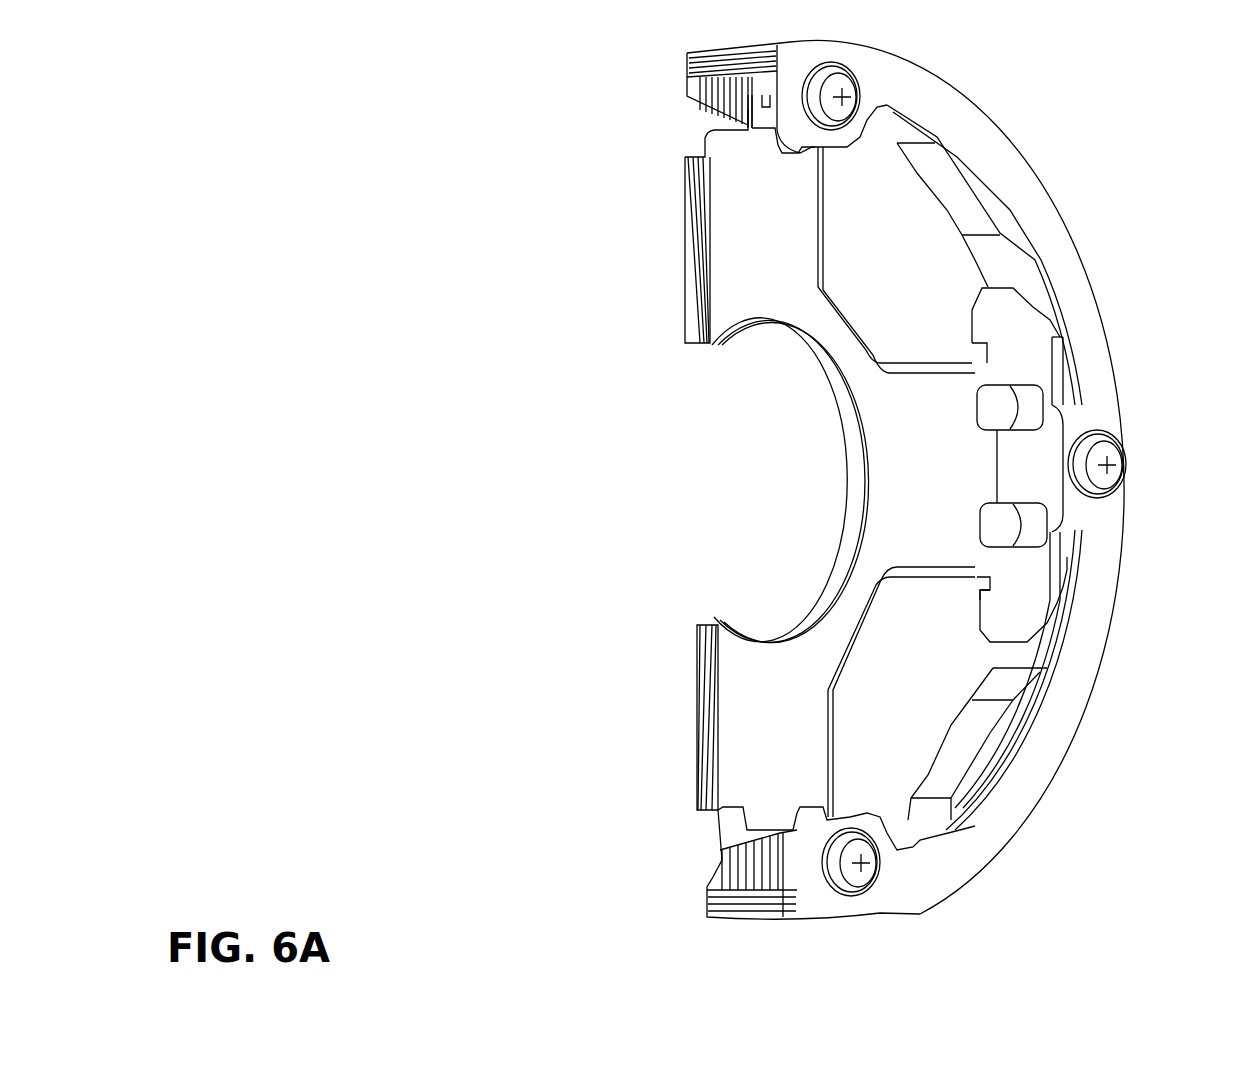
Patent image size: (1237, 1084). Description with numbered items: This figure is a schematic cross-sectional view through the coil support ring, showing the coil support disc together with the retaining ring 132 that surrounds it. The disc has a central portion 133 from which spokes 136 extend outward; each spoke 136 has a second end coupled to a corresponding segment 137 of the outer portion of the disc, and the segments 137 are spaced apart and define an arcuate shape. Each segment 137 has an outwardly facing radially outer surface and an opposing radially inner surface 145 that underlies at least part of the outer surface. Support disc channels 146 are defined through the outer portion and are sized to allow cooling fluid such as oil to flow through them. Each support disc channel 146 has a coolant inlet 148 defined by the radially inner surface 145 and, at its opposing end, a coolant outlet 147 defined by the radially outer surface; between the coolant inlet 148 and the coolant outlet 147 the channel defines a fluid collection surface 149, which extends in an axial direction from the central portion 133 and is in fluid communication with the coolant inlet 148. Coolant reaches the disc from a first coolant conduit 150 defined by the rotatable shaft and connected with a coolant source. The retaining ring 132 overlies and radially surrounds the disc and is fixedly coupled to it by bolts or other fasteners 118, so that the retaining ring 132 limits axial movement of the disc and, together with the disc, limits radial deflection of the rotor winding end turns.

The fasteners 118 is at (872, 866).
The retaining ring 132 is at (1053, 225).
The central portion 133 is at (858, 376).
The spoke 136 is at (750, 262).
The segment 137 is at (975, 292).
The radially inner surface 145 is at (1013, 600).
The support disc channel 146 is at (692, 113).
The coolant outlet 147 is at (988, 405).
The coolant inlet 148 is at (738, 142).
The fluid collection surface 149 is at (720, 115).
The first coolant conduit 150 is at (670, 84).